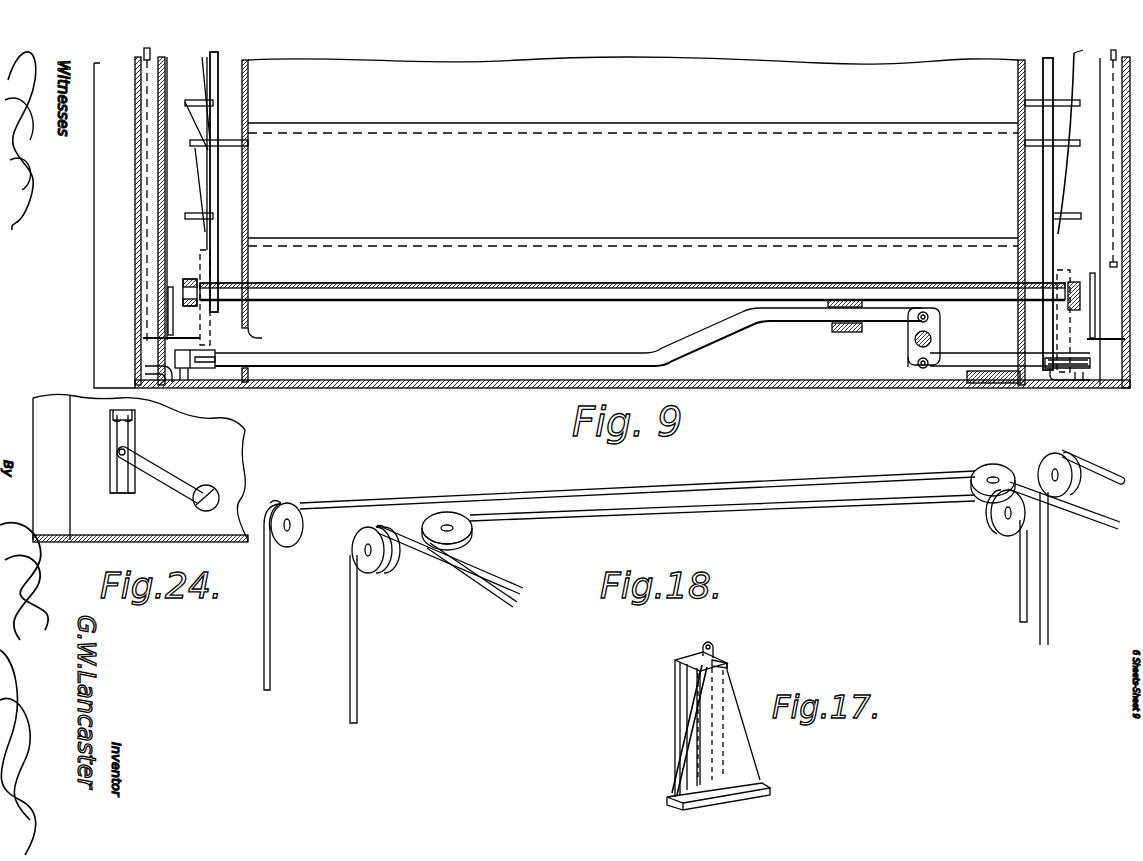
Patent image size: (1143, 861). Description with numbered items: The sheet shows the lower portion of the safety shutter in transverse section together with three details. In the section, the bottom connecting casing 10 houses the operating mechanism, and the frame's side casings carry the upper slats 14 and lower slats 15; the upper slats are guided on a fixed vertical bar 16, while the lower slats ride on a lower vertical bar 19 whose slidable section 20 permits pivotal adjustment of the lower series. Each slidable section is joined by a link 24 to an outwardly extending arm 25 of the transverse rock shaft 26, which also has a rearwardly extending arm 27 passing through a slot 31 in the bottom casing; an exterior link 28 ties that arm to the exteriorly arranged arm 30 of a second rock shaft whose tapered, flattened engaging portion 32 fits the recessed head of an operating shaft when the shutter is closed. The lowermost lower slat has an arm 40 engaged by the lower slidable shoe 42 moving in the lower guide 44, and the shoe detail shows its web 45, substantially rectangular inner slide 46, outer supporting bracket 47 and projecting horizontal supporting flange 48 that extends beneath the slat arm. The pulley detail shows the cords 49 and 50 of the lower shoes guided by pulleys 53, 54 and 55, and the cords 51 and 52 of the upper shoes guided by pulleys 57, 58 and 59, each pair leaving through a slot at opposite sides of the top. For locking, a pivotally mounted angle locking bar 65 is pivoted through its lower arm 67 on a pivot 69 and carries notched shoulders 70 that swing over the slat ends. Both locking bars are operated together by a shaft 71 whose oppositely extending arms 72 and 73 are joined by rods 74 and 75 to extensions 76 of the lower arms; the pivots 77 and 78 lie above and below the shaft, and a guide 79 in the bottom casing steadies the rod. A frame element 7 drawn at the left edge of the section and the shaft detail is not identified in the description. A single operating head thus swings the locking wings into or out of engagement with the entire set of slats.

In FIG. 9, the side frame 7 is at (92, 307).
In FIG. 24, the side frame 7 is at (38, 503).
In FIG. 24, the bottom connecting casing 10 is at (233, 495).
In FIG. 9, the upper slat 14 is at (390, 122).
In FIG. 9, the lower slat 15 is at (216, 278).
In FIG. 9, the vertical bar 16 is at (201, 164).
In FIG. 9, the lower vertical bar 19 is at (222, 196).
In FIG. 9, the slidable section 20 is at (215, 240).
In FIG. 9, the link 24 is at (213, 265).
In FIG. 9, the outwardly extending arm 25 is at (243, 330).
In FIG. 24, the outwardly extending arm 25 is at (123, 490).
In FIG. 9, the transverse rock shaft 26 is at (580, 292).
In FIG. 9, the rearwardly extending arm 27 is at (192, 279).
In FIG. 24, the rearwardly extending arm 27 is at (108, 425).
In FIG. 24, the exterior link 28 is at (115, 445).
In FIG. 24, the exteriorly arranged arm 30 is at (178, 478).
In FIG. 24, the slot 31 is at (133, 436).
In FIG. 24, the engaging portion 32 is at (218, 490).
In FIG. 9, the arm 40 is at (170, 305).
In FIG. 9, the lower slidable shoe 42 is at (152, 348).
In FIG. 9, the lower guide 44 is at (138, 232).
In FIG. 17, the web 45 is at (726, 665).
In FIG. 17, the inner slide 46 is at (687, 656).
In FIG. 17, the outer supporting bracket 47 is at (750, 767).
In FIG. 17, the horizontal supporting flange 48 is at (763, 792).
In FIG. 9, the cord 49 is at (147, 64).
In FIG. 18, the cord 49 is at (357, 700).
In FIG. 18, the cord 50 is at (1020, 601).
In FIG. 18, the cord 51 is at (270, 661).
In FIG. 18, the cord 52 is at (1088, 463).
In FIG. 18, the pulley 53 is at (375, 566).
In FIG. 18, the pulley 54 is at (998, 526).
In FIG. 18, the pulley 55 is at (472, 540).
In FIG. 18, the pulley 57 is at (298, 510).
In FIG. 18, the pulley 58 is at (1045, 455).
In FIG. 18, the pulley 59 is at (982, 472).
In FIG. 9, the angle locking bar 65 is at (145, 188).
In FIG. 9, the lower arm 67 is at (180, 385).
In FIG. 9, the pivot 69 is at (160, 368).
In FIG. 9, the shoulder 70 is at (200, 128).
In FIG. 9, the shaft 71 is at (915, 340).
In FIG. 9, the arm 72 is at (946, 328).
In FIG. 9, the arm 73 is at (908, 370).
In FIG. 9, the rod 74 is at (548, 362).
In FIG. 9, the rod 75 is at (968, 382).
In FIG. 9, the extension 76 is at (1075, 372).
In FIG. 9, the pivot 77 is at (930, 312).
In FIG. 9, the pivot 78 is at (920, 367).
In FIG. 9, the guide 79 is at (868, 300).